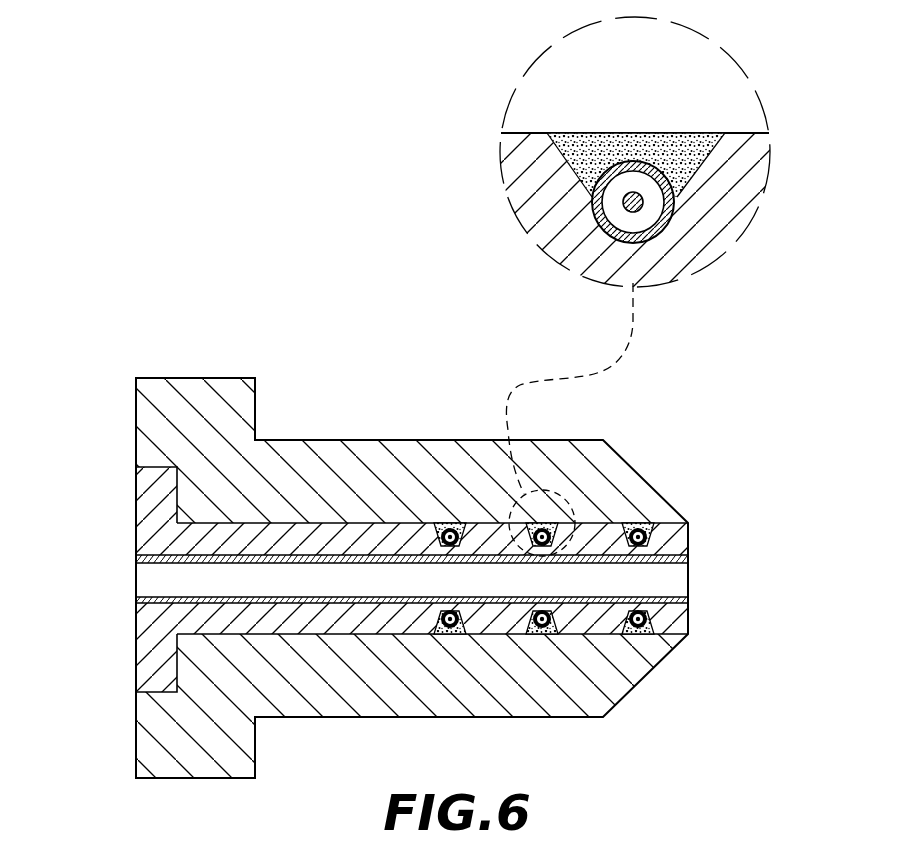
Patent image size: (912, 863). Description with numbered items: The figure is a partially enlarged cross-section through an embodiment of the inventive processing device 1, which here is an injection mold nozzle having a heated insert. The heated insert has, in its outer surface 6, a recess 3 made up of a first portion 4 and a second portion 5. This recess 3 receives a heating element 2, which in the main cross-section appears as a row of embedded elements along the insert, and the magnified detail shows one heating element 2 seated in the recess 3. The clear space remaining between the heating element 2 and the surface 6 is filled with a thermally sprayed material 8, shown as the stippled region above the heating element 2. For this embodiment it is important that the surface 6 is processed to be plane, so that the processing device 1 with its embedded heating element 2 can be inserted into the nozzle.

The processing device 1 is at (110, 528).
The heating element 2 is at (609, 313).
The recess 3 is at (644, 240).
The first portion 4 is at (516, 180).
The second portion 5 is at (598, 240).
The surface 6 is at (358, 523).
The thermally sprayed material 8 is at (692, 150).